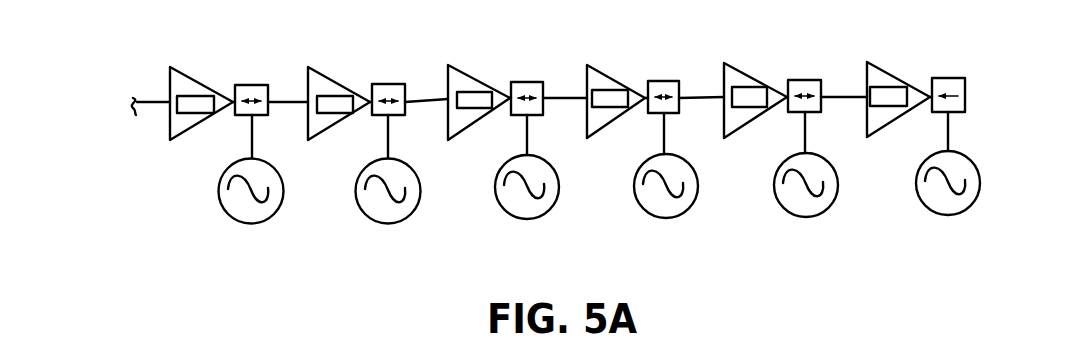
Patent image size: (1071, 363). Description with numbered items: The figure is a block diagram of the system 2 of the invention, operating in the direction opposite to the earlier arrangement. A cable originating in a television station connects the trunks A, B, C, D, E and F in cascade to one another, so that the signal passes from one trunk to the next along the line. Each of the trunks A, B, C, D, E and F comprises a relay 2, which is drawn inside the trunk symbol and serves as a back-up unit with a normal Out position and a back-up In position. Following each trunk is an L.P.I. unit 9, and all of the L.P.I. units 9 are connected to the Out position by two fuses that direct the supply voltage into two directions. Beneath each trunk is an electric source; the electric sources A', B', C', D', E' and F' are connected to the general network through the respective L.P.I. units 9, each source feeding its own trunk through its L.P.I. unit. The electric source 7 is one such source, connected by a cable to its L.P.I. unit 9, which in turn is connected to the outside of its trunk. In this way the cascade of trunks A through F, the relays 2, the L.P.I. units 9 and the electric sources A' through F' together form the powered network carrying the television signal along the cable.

The trunk A is at (219, 79).
The trunk B is at (356, 79).
The trunk C is at (495, 77).
The trunk D is at (633, 76).
The trunk E is at (772, 74).
The trunk F is at (916, 73).
The electric source A' is at (247, 189).
The electric source B' is at (386, 189).
The electric source C' is at (521, 188).
The electric source D' is at (661, 187).
The electric source E' is at (801, 186).
The electric source F' is at (941, 186).
The electric source 7 is at (277, 208).
The L.P.I. unit 9 is at (530, 82).
The relay 2 is at (750, 88).